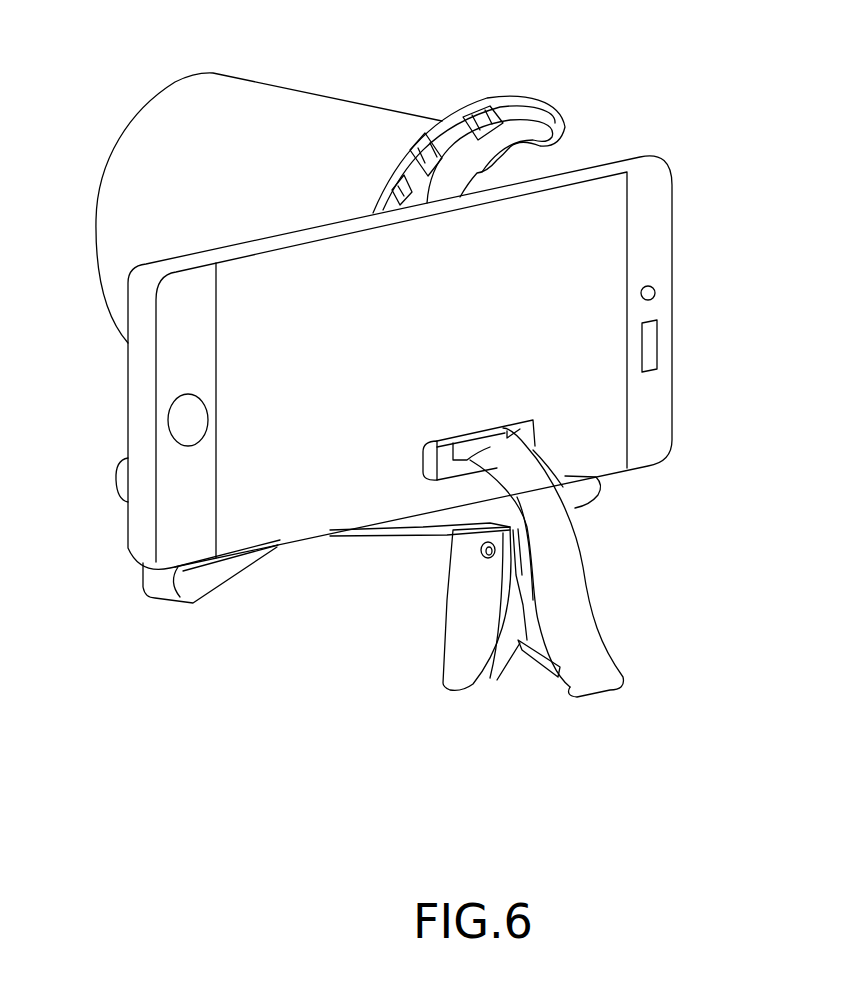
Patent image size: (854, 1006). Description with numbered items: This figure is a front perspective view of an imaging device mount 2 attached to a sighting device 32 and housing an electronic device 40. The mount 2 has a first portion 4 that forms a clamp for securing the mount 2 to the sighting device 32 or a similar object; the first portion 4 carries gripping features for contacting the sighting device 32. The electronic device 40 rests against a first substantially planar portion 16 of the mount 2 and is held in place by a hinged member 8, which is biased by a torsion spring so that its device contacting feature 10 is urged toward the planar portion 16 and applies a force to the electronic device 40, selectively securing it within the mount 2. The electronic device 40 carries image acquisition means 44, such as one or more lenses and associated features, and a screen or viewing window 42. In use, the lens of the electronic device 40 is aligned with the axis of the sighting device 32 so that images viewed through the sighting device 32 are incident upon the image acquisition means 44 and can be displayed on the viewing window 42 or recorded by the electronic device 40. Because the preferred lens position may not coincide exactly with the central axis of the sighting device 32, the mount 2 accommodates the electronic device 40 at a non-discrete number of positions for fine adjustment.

The imaging device mount 2 is at (716, 64).
The first portion 4 is at (567, 112).
The hinged member 8 is at (603, 660).
The device contacting feature 10 is at (427, 463).
The first substantially planar portion 16 is at (445, 515).
The sighting device 32 is at (308, 107).
The electronic device 40 is at (389, 363).
The screen or viewing window 42 is at (278, 498).
The image acquisition means 44 is at (656, 293).